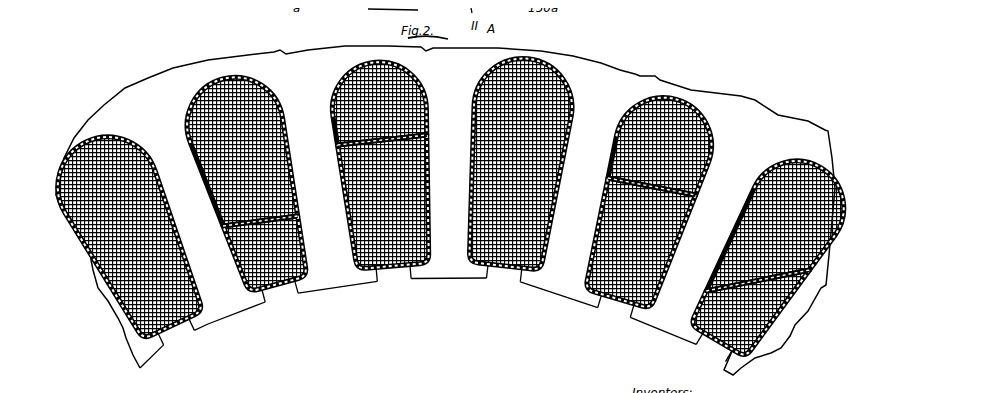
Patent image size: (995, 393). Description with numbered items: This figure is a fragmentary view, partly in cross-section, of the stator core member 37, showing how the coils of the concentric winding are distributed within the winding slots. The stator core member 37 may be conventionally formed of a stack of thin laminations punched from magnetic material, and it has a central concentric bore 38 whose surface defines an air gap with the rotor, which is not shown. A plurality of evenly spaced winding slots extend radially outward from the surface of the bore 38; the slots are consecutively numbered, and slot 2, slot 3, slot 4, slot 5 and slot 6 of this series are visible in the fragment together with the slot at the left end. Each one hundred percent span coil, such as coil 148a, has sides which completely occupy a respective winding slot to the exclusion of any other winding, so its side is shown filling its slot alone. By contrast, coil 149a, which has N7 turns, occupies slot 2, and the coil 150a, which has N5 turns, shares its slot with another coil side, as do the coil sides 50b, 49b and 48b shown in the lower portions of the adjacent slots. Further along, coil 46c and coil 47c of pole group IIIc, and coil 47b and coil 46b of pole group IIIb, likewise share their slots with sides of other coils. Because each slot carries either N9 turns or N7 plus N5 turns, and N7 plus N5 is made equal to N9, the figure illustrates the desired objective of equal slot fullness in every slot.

The stator core member 37 is at (686, 49).
The central concentric bore 38 is at (437, 327).
The coil 148a is at (152, 298).
The coil 149a is at (212, 99).
The coil 150a is at (372, 90).
The coil side in slot 4 48b is at (508, 215).
The coil side in slot 3 49b is at (392, 213).
The coil side in slot 2 50b is at (290, 273).
The coil 46c is at (700, 130).
The coil 47c is at (776, 163).
The coil 47b is at (597, 292).
The coil 46b is at (706, 337).
The winding slot 2 is at (253, 205).
The winding slot 3 is at (380, 187).
The winding slot 4 is at (520, 200).
The winding slot 5 is at (658, 227).
The winding slot 6 is at (745, 254).